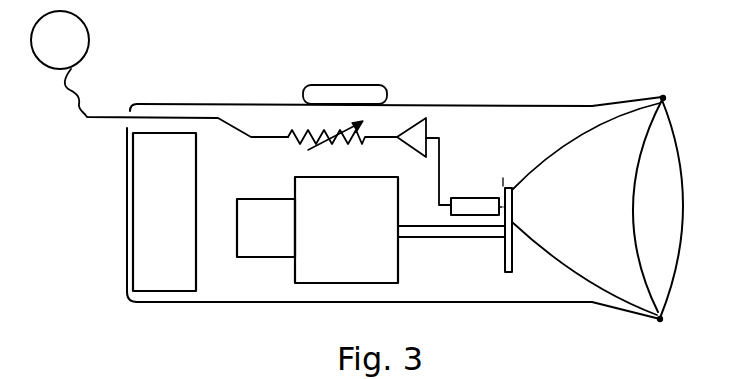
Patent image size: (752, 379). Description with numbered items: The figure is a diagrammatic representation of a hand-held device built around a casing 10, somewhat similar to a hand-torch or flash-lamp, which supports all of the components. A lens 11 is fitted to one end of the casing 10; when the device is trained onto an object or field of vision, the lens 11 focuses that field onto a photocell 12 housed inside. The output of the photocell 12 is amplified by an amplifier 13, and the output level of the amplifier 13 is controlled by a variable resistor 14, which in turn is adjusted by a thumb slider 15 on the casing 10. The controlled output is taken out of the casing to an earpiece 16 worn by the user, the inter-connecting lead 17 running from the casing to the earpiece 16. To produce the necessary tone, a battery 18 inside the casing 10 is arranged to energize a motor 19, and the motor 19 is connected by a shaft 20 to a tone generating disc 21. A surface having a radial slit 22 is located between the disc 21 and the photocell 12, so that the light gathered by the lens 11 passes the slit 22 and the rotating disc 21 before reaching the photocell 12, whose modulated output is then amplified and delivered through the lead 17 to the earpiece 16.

The casing 10 is at (541, 115).
The lens 11 is at (670, 151).
The photocell 12 is at (469, 198).
The amplifier 13 is at (424, 126).
The variable resistor 14 is at (353, 141).
The thumb slider 15 is at (372, 92).
The earpiece 16 is at (83, 40).
The inter-connecting lead 17 is at (85, 108).
The battery 18 is at (170, 224).
The motor 19 is at (350, 243).
The shaft 20 is at (452, 231).
The tone generating disc 21 is at (505, 269).
The radial slit 22 is at (508, 184).